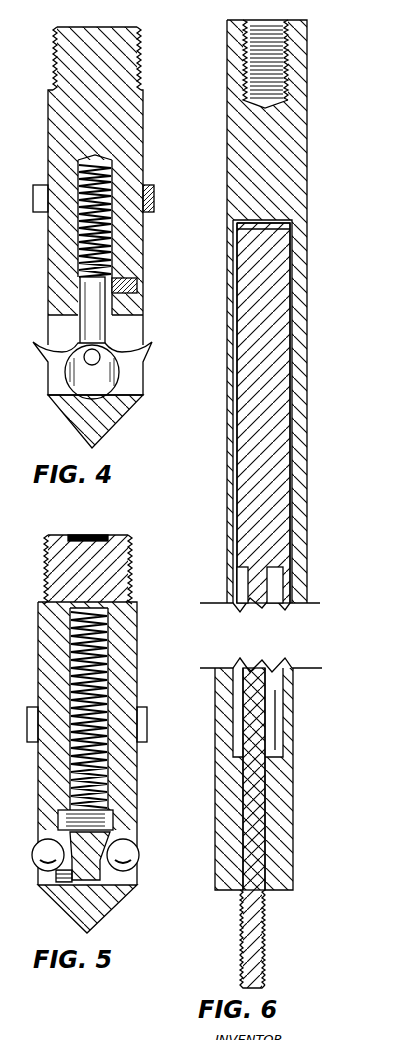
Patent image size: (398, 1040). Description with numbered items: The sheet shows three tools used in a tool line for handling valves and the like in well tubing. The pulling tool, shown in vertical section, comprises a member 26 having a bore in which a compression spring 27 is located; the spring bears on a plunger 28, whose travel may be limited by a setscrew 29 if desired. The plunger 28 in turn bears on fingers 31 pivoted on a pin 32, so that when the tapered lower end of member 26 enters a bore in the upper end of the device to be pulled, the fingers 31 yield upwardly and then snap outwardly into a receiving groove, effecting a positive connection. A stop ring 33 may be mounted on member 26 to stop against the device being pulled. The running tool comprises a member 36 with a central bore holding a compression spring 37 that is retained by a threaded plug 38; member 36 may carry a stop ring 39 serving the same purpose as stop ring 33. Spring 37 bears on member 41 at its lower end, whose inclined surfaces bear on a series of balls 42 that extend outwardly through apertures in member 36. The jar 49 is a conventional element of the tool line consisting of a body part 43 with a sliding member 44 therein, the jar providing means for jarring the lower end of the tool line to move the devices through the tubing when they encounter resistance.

In FIG. 4, the member 26 is at (143, 118).
In FIG. 4, the compression spring 27 is at (100, 180).
In FIG. 4, the plunger 28 is at (105, 332).
In FIG. 4, the setscrew 29 is at (137, 285).
In FIG. 4, the fingers 31 is at (150, 352).
In FIG. 4, the pin 32 is at (100, 358).
In FIG. 4, the stop ring 33 is at (154, 203).
In FIG. 5, the member 36 is at (137, 610).
In FIG. 5, the compression spring 37 is at (95, 660).
In FIG. 5, the threaded plug 38 is at (95, 565).
In FIG. 5, the stop ring 39 is at (147, 722).
In FIG. 5, the member 41 is at (100, 845).
In FIG. 5, the balls 42 is at (136, 858).
In FIG. 6, the body part 43 is at (307, 168).
In FIG. 6, the sliding member 44 is at (265, 378).
In FIG. 6, the jar 49 is at (297, 520).